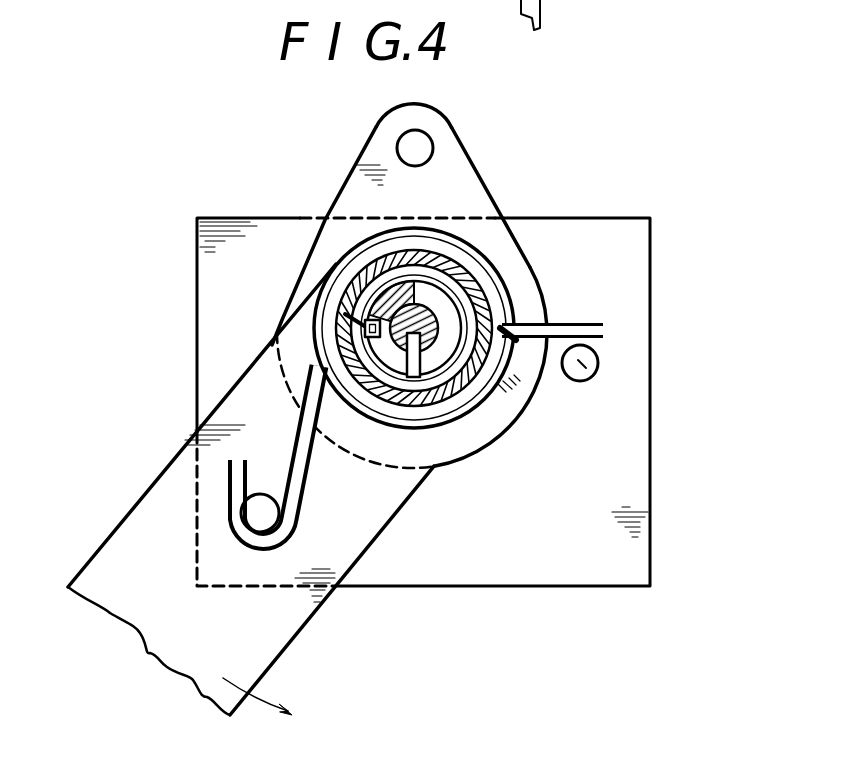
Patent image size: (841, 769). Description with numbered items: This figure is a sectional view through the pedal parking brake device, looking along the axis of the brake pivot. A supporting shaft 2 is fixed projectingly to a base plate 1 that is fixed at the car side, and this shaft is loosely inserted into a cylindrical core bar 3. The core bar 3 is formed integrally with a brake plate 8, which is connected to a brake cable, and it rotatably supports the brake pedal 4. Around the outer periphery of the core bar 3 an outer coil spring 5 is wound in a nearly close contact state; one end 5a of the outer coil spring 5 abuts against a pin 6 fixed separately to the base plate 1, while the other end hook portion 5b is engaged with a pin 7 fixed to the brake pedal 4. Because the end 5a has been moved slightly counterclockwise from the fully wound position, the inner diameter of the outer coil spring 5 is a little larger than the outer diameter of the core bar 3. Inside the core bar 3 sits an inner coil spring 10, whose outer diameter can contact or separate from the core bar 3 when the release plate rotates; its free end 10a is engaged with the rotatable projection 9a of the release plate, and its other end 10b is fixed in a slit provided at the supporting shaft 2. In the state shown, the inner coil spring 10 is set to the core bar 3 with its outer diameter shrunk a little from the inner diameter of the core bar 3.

The base plate 1 is at (642, 512).
The supporting shaft 2 is at (508, 393).
The core bar 3 is at (473, 243).
The brake pedal 4 is at (297, 606).
The outer coil spring 5 is at (366, 328).
The end portion of outer coil spring 5a is at (590, 323).
The end hook portion of outer coil spring 5b is at (247, 511).
The pin 6 is at (598, 363).
The pin 7 is at (233, 507).
The brake plate 8 is at (448, 128).
The projection 9a is at (388, 293).
The inner coil spring 10 is at (460, 311).
The free end of inner coil spring 10a is at (328, 318).
The other end of inner coil spring 10b is at (446, 375).